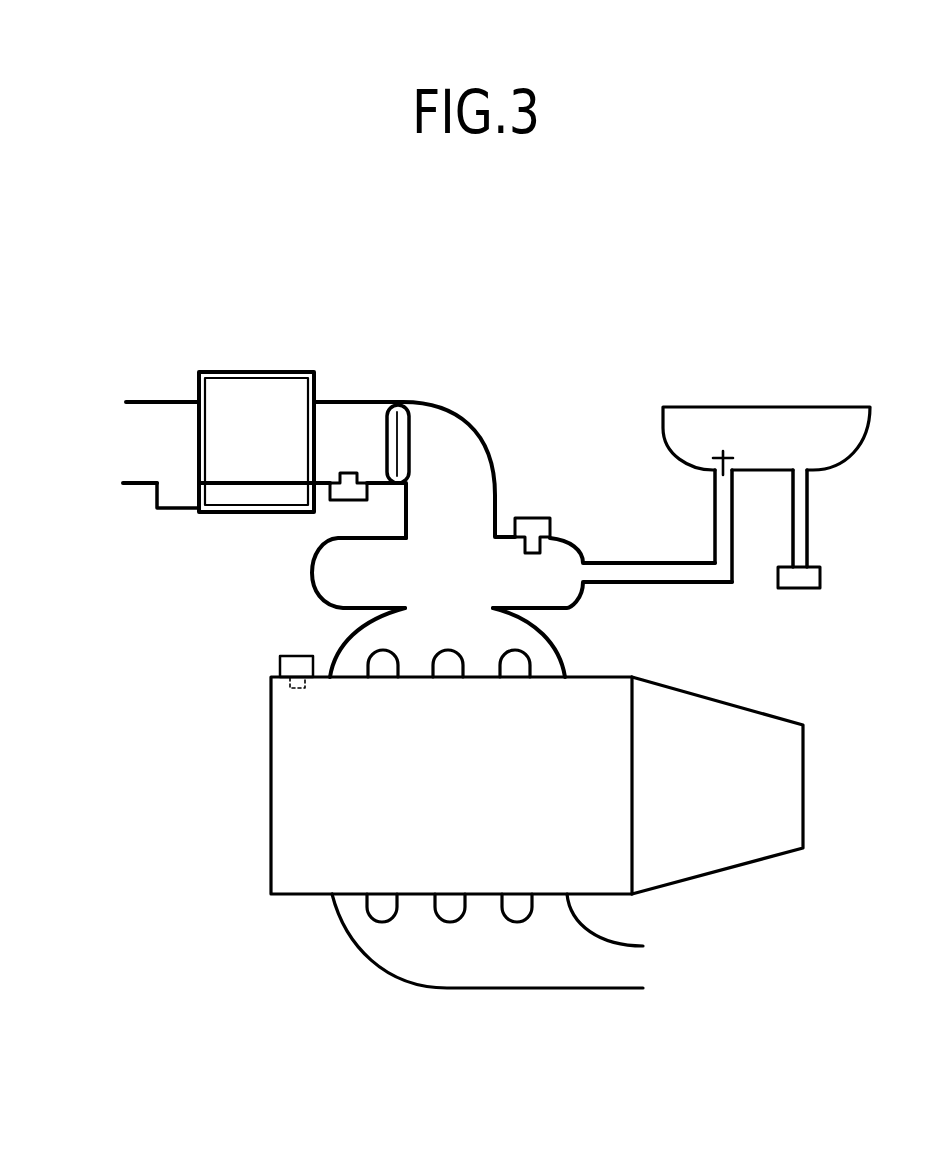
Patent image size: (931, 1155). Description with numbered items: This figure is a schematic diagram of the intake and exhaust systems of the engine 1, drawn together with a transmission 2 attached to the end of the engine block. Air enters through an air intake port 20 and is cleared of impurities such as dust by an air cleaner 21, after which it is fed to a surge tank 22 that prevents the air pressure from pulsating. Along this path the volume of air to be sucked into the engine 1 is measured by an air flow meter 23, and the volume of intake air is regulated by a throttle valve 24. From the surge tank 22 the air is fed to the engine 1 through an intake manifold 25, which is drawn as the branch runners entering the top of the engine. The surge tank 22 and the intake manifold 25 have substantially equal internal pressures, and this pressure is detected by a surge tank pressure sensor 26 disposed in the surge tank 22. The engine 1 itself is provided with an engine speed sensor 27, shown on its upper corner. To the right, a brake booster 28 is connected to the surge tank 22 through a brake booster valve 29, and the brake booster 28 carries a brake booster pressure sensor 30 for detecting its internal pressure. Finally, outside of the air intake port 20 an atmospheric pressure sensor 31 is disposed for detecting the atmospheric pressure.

The engine 1 is at (288, 841).
The transmission 2 is at (722, 855).
The air intake port 20 is at (143, 452).
The air cleaner 21 is at (255, 400).
The surge tank 22 is at (458, 562).
The air flow meter 23 is at (343, 503).
The throttle valve 24 is at (390, 433).
The intake manifold 25 is at (545, 665).
The surge tank pressure sensor 26 is at (530, 523).
The engine speed sensor 27 is at (290, 663).
The brake booster 28 is at (827, 445).
The brake booster valve 29 is at (723, 452).
The brake booster pressure sensor 30 is at (800, 588).
The atmospheric pressure sensor 31 is at (177, 498).